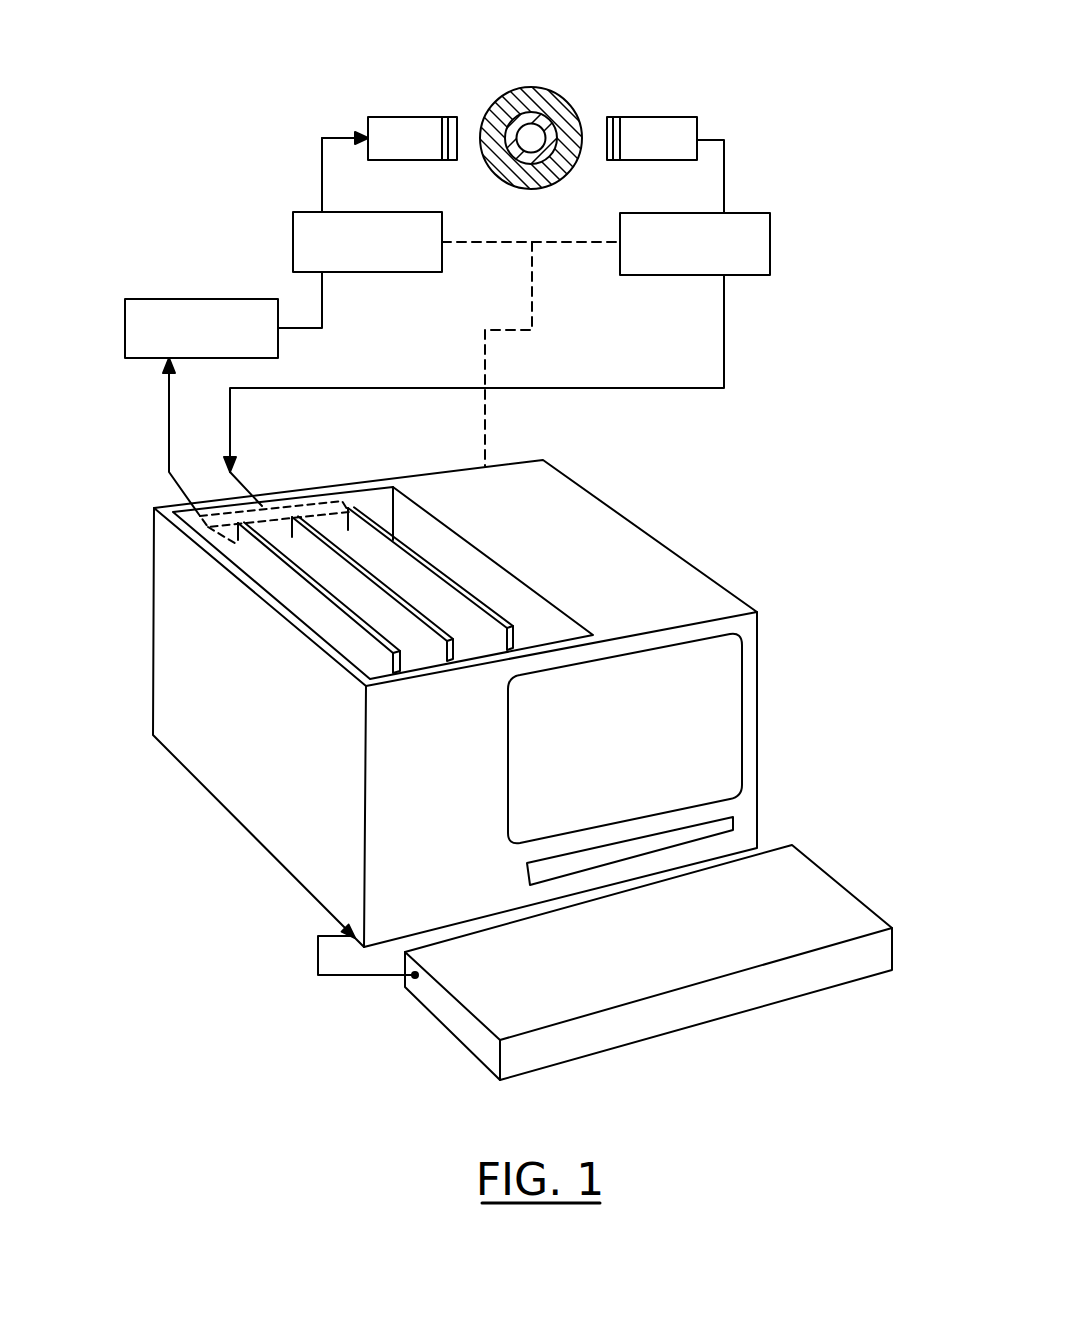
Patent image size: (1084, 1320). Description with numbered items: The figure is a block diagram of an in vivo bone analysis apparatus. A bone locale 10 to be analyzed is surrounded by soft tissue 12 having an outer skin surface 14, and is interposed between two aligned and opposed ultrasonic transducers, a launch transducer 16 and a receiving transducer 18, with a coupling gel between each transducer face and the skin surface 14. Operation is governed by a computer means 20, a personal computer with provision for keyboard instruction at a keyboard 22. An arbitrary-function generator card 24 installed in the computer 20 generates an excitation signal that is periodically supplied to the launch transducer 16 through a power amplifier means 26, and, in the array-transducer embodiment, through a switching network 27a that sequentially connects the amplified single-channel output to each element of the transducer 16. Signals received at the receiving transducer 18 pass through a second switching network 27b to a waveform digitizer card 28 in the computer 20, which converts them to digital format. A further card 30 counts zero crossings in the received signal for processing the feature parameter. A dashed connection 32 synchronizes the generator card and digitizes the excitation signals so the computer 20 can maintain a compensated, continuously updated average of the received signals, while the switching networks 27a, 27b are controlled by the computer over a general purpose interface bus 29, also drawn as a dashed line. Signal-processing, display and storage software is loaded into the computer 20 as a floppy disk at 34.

The bone locale 10 is at (528, 110).
The soft tissue 12 is at (548, 92).
The outer skin surface 14 is at (575, 105).
The launch transducer 16 is at (395, 116).
The receiving transducer 18 is at (665, 116).
The computer means 20 is at (177, 648).
The keyboard 22 is at (812, 875).
The arbitrary-function generator card 24 is at (328, 628).
The power amplifier means 26 is at (188, 299).
The switching network 27a is at (293, 222).
The switching network 27b is at (770, 228).
The waveform digitizer card 28 is at (413, 625).
The general purpose interface bus 29 is at (485, 378).
The zero-crossing counter card 30 is at (412, 548).
The connection 32 is at (213, 517).
The floppy disk loading location 34 is at (727, 828).